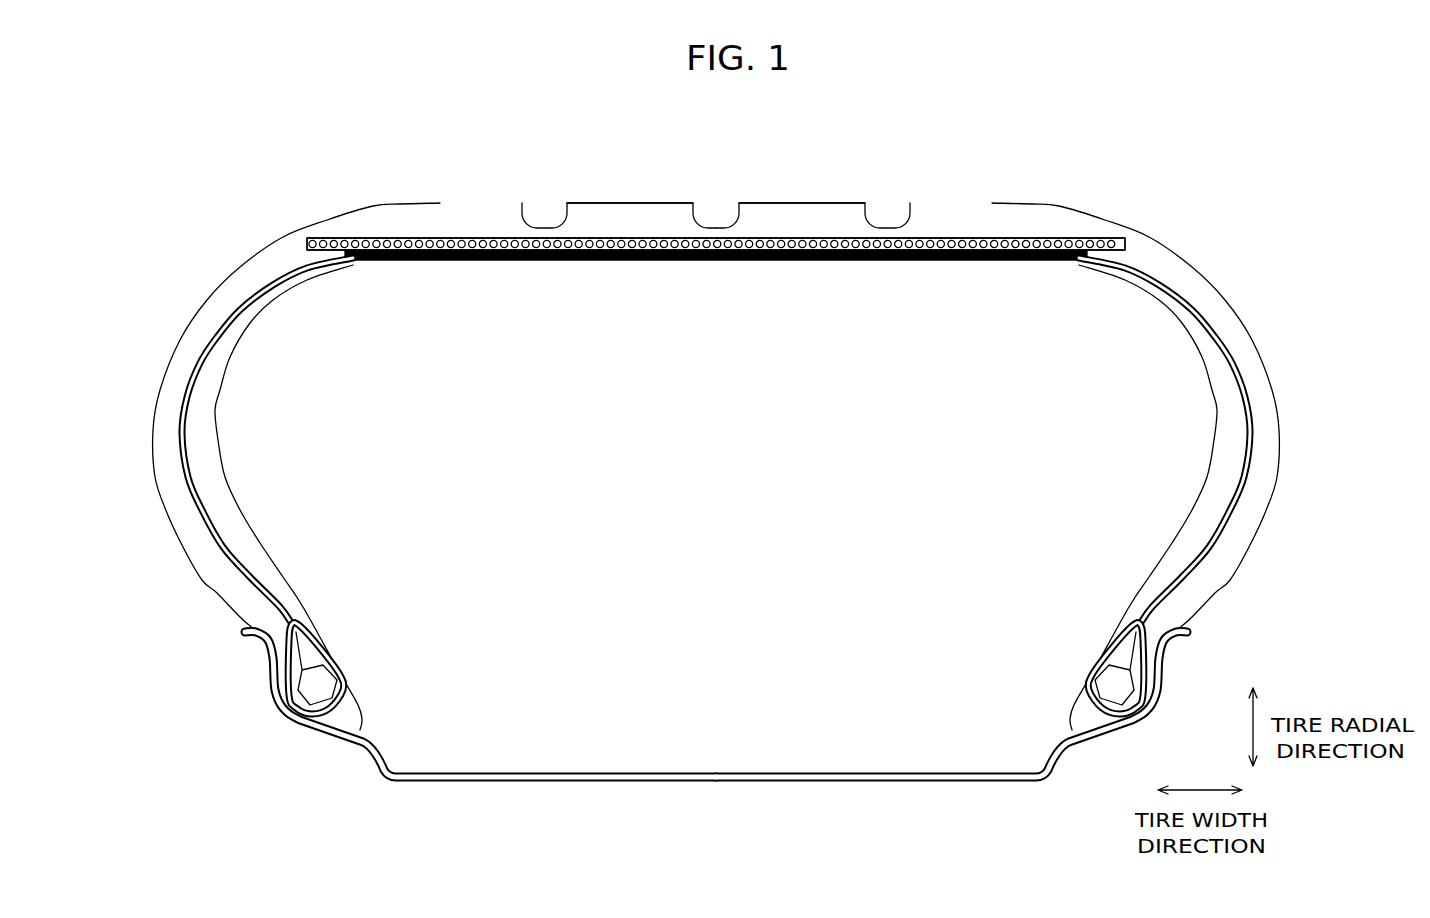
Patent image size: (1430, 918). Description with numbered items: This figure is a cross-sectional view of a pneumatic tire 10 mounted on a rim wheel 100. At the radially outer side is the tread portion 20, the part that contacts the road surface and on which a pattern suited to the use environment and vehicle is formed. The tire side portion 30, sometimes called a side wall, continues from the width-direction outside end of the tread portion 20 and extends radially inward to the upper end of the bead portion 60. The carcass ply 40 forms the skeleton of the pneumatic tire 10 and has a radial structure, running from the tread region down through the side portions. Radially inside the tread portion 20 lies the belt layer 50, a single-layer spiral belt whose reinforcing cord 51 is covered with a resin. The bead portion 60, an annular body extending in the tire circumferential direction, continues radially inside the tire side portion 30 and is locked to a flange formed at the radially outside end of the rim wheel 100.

The pneumatic tire 10 is at (1084, 149).
The tread portion 20 is at (645, 202).
The tire side portion 30 is at (170, 413).
The carcass ply 40 is at (197, 366).
The belt layer 50 is at (462, 238).
The reinforcing cord 51 is at (413, 242).
The bead portion 60 is at (367, 641).
The rim wheel 100 is at (613, 777).